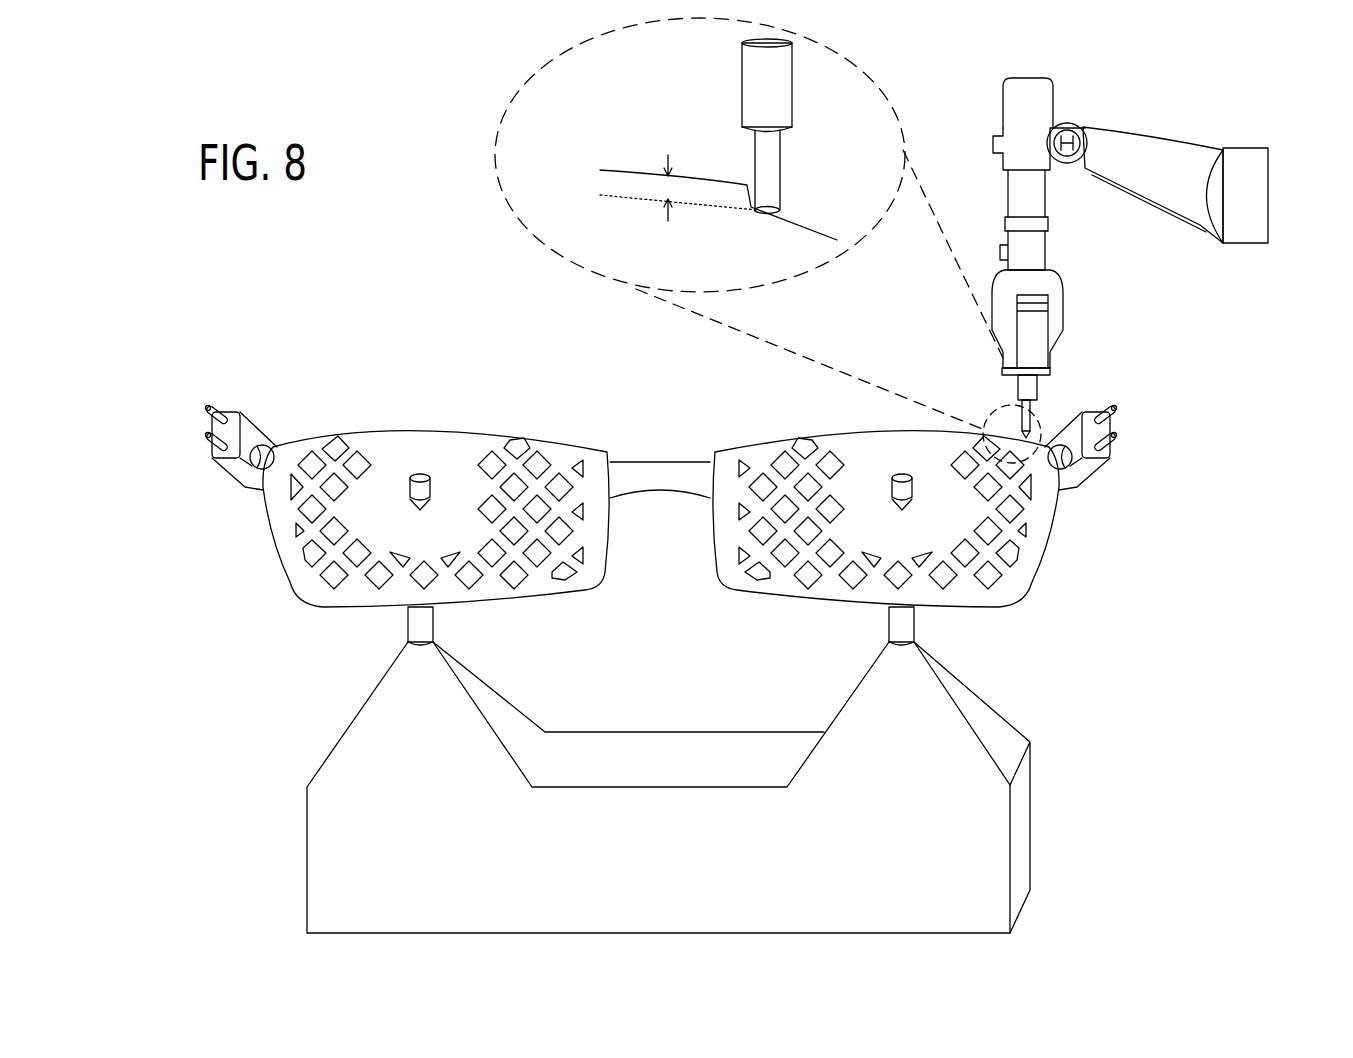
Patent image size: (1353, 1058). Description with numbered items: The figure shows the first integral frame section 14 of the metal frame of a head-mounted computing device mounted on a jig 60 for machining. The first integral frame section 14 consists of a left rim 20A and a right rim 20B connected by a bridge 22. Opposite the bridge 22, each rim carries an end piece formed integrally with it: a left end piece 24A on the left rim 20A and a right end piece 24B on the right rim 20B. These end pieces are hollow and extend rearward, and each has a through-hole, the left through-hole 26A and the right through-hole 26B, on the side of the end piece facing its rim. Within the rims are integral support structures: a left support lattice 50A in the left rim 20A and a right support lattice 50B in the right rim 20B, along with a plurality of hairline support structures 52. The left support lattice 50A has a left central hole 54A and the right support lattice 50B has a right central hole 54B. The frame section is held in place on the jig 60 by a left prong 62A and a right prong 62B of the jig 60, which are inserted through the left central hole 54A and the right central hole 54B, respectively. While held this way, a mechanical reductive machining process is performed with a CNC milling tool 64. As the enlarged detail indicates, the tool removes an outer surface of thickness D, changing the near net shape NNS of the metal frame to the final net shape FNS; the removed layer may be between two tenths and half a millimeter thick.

The first integral frame section 14 is at (545, 400).
The left rim 20A is at (298, 593).
The right rim 20B is at (1018, 593).
The bridge 22 is at (661, 460).
The left end piece 24A is at (225, 410).
The right end piece 24B is at (1093, 410).
The left through-hole 26A is at (243, 465).
The right through-hole 26B is at (1076, 465).
The left support lattice 50A is at (522, 570).
The right support lattice 50B is at (798, 570).
The hairline support structures 52 is at (210, 440).
The left central hole 54A is at (407, 496).
The right central hole 54B is at (913, 496).
The jig 60 is at (1030, 822).
The left prong 62A is at (420, 473).
The right prong 62B is at (901, 473).
The CNC milling tool 64 is at (1247, 244).
The near net shape NNS is at (641, 170).
The final net shape FNS is at (630, 203).
The thickness D is at (669, 203).